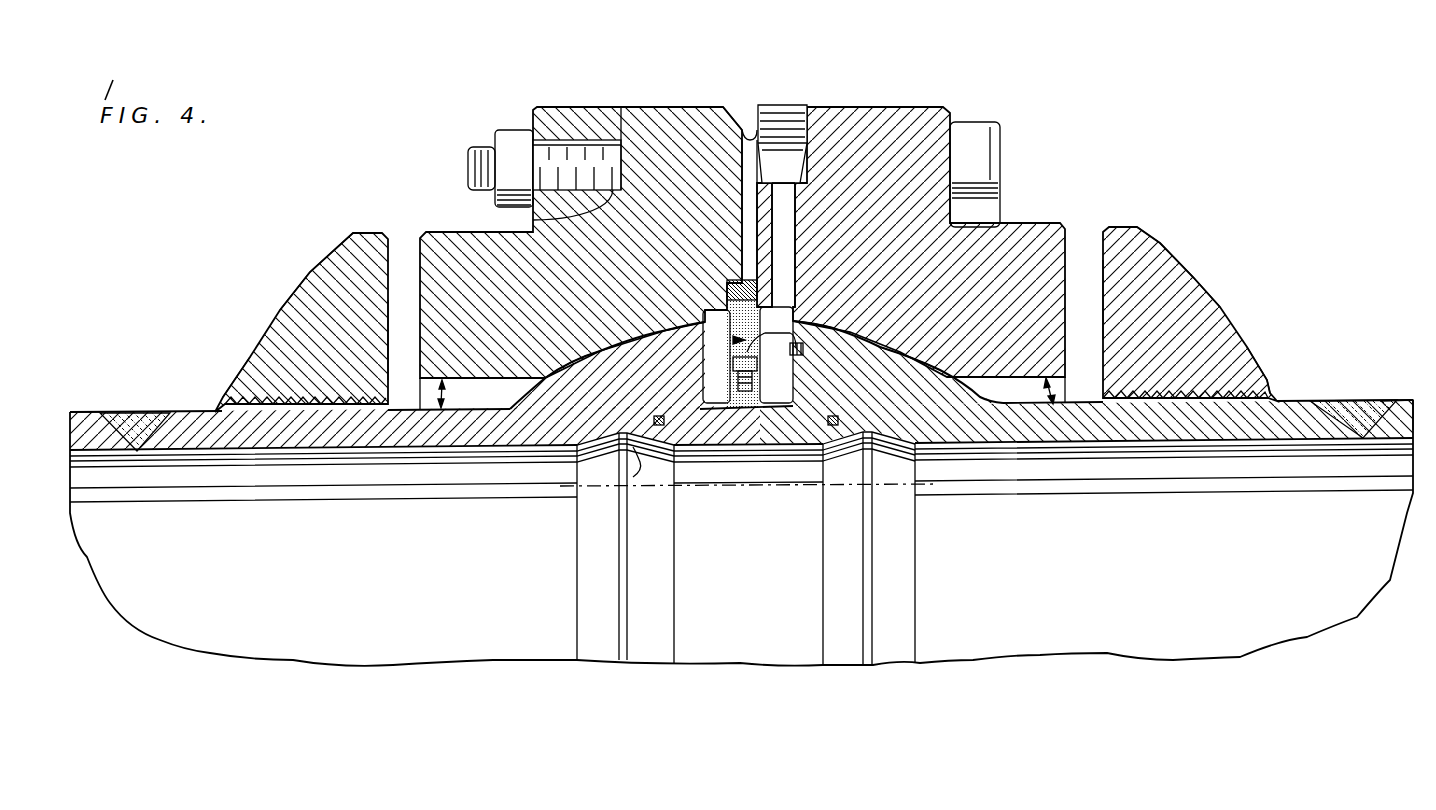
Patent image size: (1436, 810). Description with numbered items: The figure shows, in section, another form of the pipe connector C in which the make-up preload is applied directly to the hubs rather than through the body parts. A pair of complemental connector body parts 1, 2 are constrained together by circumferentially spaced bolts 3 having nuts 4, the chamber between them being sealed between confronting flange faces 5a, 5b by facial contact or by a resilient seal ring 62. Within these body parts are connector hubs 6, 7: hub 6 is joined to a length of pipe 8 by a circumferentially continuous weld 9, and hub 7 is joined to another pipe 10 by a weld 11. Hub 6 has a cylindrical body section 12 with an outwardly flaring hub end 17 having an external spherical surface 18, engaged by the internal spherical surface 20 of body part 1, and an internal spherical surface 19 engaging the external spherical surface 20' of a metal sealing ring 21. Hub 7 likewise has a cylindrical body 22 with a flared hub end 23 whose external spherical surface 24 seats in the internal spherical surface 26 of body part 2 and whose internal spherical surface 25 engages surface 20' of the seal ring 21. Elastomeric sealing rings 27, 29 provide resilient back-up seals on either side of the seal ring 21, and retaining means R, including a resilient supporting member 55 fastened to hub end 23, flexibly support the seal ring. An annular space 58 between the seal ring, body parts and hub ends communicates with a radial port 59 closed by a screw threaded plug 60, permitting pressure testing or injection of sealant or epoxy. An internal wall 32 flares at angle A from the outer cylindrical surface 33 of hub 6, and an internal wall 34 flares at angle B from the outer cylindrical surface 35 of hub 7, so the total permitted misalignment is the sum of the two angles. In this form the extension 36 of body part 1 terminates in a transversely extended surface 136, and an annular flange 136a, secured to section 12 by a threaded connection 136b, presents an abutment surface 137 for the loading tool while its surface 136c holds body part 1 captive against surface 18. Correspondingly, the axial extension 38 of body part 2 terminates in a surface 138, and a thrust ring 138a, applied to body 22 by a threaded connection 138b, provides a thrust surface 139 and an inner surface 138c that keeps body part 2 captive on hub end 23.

The connector body part 1 is at (605, 105).
The connector body part 2 is at (896, 103).
The bolt 3 is at (553, 150).
The nut 4 is at (507, 130).
The flange face 5a is at (752, 110).
The flange face 5b is at (697, 122).
The connector hub 6 is at (367, 447).
The connector hub 7 is at (1207, 440).
The pipe 8 is at (80, 411).
The weld 9 is at (137, 411).
The pipe 10 is at (1400, 412).
The weld 11 is at (1340, 398).
The cylindrical body section 12 is at (223, 440).
The hub end 17 is at (587, 380).
The external spherical surface 18 is at (645, 361).
The internal spherical surface 19 is at (590, 480).
The internal spherical surface 20 is at (554, 354).
The external spherical surface 20' is at (715, 471).
The metal sealing ring 21 is at (782, 440).
The cylindrical body 22 is at (1283, 440).
The hub end 23 is at (858, 362).
The external spherical surface 24 is at (893, 350).
The internal spherical surface 25 is at (873, 493).
The internal spherical surface 26 is at (842, 338).
The elastomeric sealing ring 27 is at (657, 420).
The elastomeric sealing ring 29 is at (837, 410).
The internal wall 32 is at (472, 377).
The outer cylindrical surface 33 is at (462, 432).
The internal wall 34 is at (995, 379).
The outer cylindrical surface 35 is at (1077, 432).
The transversely extended surface 36 is at (448, 247).
The axial extension 38 is at (1013, 243).
The resilient supporting member 55 is at (768, 332).
The annular space 58 is at (702, 327).
The radial port 59 is at (797, 192).
The screw threaded plug 60 is at (790, 113).
The resilient seal ring 62 is at (727, 283).
The transversely extended surface 136 is at (403, 262).
The annular flange 136a is at (293, 312).
The threaded connection 136b is at (247, 398).
The thrust ring surface 136c is at (393, 343).
The abutment surface 137 is at (310, 272).
The transversely disposed surface 138 is at (1067, 247).
The thrust ring 138a is at (1147, 260).
The threaded connection 138b is at (1237, 380).
The inner transversely extended surface 138c is at (1104, 288).
The thrust surface 139 is at (1213, 297).
The angle A is at (444, 380).
The angle B is at (1046, 378).
The pipe connector C is at (1008, 100).
The retaining means R is at (687, 368).